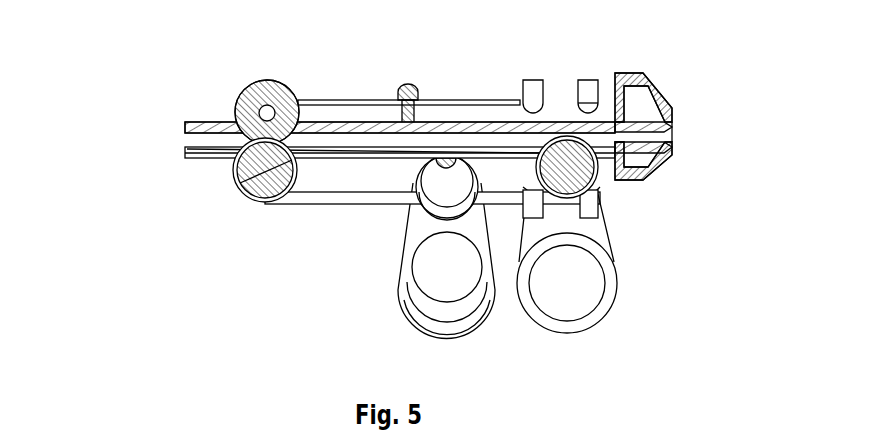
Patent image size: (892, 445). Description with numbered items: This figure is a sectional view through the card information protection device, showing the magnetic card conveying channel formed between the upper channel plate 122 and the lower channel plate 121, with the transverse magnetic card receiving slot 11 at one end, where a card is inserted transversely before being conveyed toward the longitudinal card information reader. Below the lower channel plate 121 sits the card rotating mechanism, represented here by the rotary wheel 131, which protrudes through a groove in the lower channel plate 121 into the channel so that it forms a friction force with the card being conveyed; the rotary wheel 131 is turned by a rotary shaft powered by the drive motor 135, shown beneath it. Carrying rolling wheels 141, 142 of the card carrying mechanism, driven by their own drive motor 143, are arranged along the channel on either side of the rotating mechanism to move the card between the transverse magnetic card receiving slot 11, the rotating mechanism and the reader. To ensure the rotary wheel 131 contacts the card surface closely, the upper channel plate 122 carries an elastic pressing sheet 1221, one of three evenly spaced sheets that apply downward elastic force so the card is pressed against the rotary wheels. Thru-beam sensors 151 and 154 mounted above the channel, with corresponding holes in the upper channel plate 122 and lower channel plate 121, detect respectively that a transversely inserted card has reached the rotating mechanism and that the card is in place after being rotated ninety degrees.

The transverse magnetic card receiving slot 11 is at (640, 100).
The lower channel plate 121 is at (185, 154).
The upper channel plate 122 is at (200, 122).
The elastic pressing sheet 1221 is at (463, 100).
The rotary wheel 131 is at (448, 178).
The drive motor 135 is at (453, 280).
The carrying rolling wheel 141 is at (565, 170).
The carrying rolling wheel 142 is at (245, 175).
The drive motor 143 is at (580, 280).
The thru-beam sensor 151 is at (540, 117).
The thru-beam sensor 154 is at (593, 97).